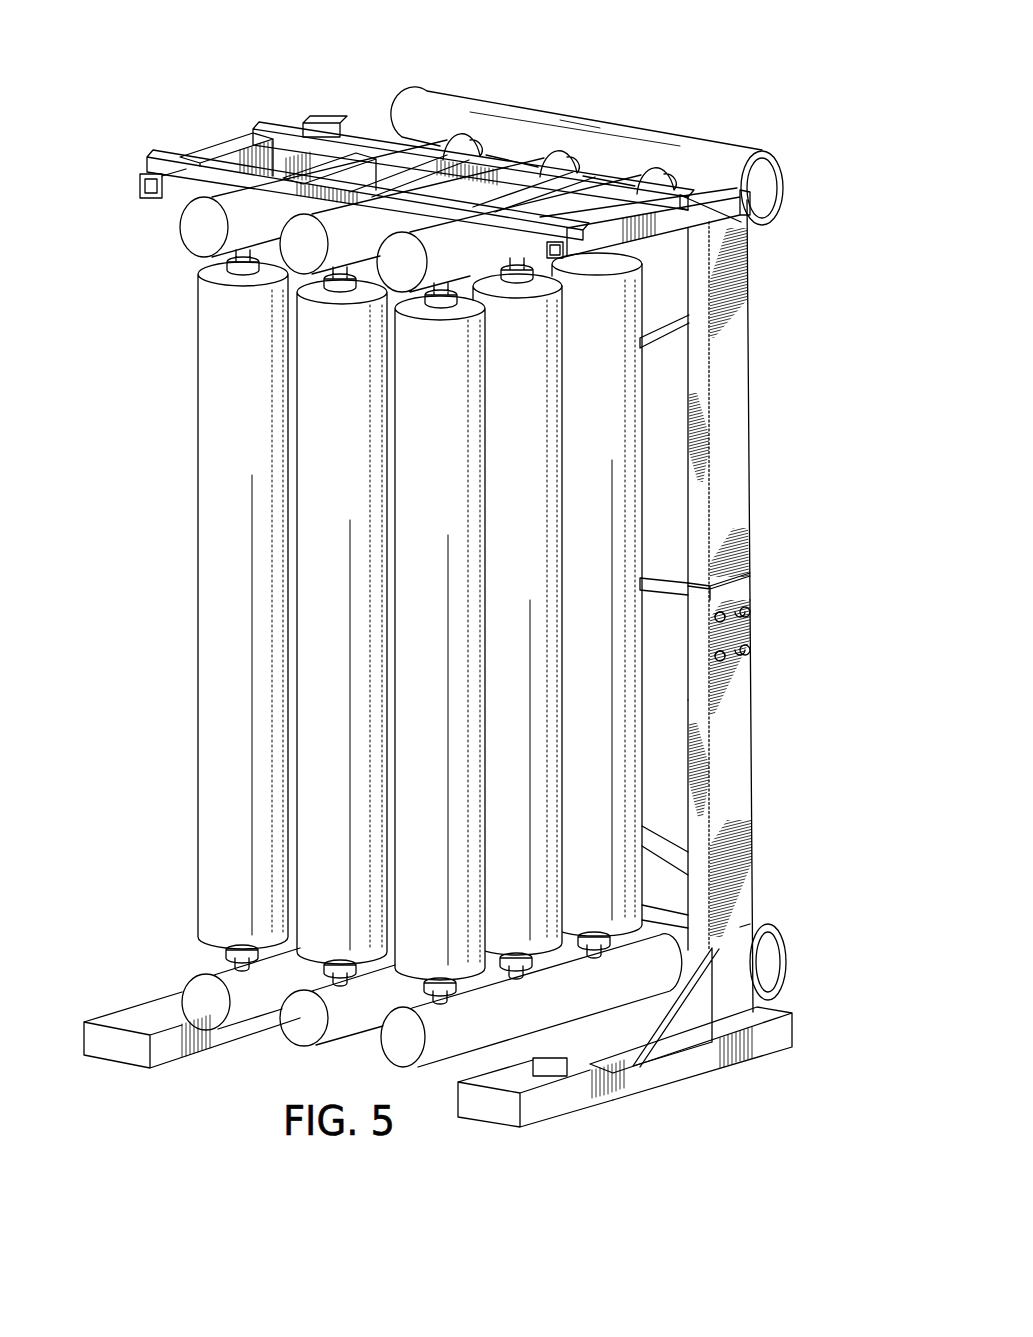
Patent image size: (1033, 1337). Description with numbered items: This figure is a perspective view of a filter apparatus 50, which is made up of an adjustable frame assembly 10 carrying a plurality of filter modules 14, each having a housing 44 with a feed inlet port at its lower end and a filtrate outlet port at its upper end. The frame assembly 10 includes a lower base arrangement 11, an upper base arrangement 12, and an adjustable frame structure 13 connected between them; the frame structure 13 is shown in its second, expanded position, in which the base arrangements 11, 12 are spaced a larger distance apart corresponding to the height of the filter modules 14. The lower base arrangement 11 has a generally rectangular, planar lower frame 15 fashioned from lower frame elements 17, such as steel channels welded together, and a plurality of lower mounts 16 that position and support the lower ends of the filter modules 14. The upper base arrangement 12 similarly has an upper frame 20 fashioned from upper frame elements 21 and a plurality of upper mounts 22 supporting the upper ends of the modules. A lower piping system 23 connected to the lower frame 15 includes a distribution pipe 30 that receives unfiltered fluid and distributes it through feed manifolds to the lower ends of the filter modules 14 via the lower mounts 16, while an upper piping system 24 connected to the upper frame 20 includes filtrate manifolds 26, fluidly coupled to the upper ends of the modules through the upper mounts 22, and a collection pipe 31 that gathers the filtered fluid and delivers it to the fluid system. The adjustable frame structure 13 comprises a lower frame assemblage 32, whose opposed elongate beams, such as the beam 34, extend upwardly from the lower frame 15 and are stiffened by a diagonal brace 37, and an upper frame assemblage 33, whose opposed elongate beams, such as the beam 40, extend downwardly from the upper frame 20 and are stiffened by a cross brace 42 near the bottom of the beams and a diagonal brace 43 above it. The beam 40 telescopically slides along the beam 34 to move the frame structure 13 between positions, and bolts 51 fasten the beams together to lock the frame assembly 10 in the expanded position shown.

The adjustable frame assembly 10 is at (806, 150).
The lower base arrangement 11 is at (122, 1012).
The upper base arrangement 12 is at (212, 152).
The adjustable frame structure 13 is at (732, 592).
The filter module 14 is at (328, 592).
The lower frame 15 is at (681, 1068).
The lower mount 16 is at (343, 985).
The lower frame element 17 is at (537, 1065).
The upper frame 20 is at (258, 120).
The upper frame element 21 is at (343, 120).
The upper mount 22 is at (343, 282).
The lower piping system 23 is at (775, 940).
The upper piping system 24 is at (697, 130).
The filtrate manifold 26 is at (447, 140).
The distribution pipe 30 is at (781, 985).
The collection pipe 31 is at (600, 130).
The lower frame assemblage 32 is at (735, 777).
The upper frame assemblage 33 is at (730, 358).
The elongate beam 34 is at (735, 737).
The diagonal brace 37 is at (677, 850).
The elongate beam 40 is at (730, 402).
The cross brace 42 is at (663, 580).
The diagonal brace 43 is at (677, 340).
The housing 44 is at (328, 677).
The filter apparatus 50 is at (118, 226).
The bolt 51 is at (749, 650).